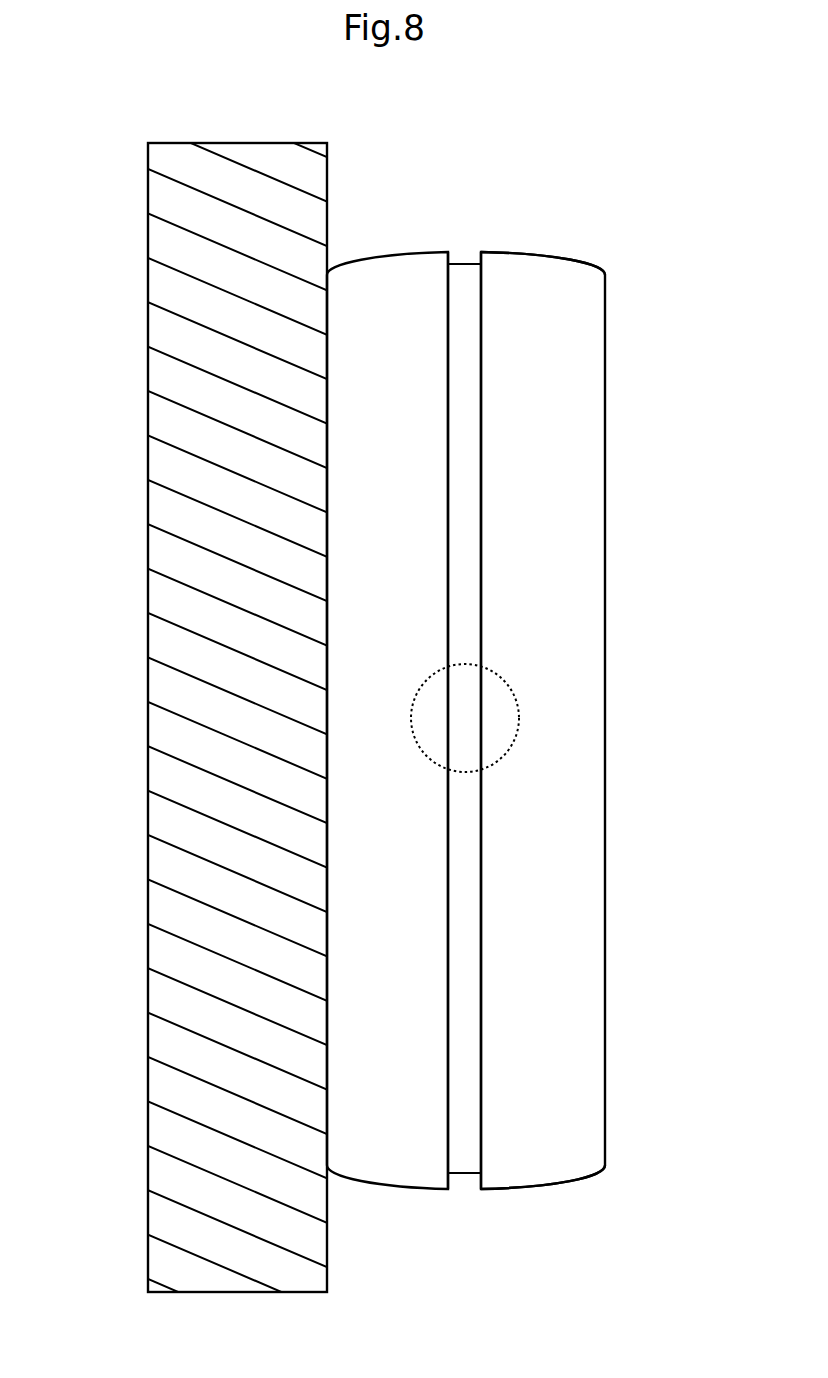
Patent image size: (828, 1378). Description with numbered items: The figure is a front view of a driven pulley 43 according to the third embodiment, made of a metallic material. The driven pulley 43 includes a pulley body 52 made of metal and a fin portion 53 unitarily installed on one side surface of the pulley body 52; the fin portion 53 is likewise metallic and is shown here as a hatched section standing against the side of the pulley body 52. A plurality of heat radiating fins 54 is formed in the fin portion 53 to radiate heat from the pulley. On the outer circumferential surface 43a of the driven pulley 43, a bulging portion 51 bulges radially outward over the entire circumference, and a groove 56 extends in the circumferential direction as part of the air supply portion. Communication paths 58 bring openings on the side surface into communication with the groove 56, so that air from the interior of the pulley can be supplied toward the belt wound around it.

The driven pulley 43 is at (425, 107).
The outer circumferential surface 43a is at (523, 897).
The bulging portion 51 is at (565, 255).
The pulley body 52 is at (417, 250).
The fin portion 53 is at (148, 188).
The heat radiating fins 54 is at (160, 557).
The groove 56 is at (470, 612).
The communication paths 58 is at (500, 717).